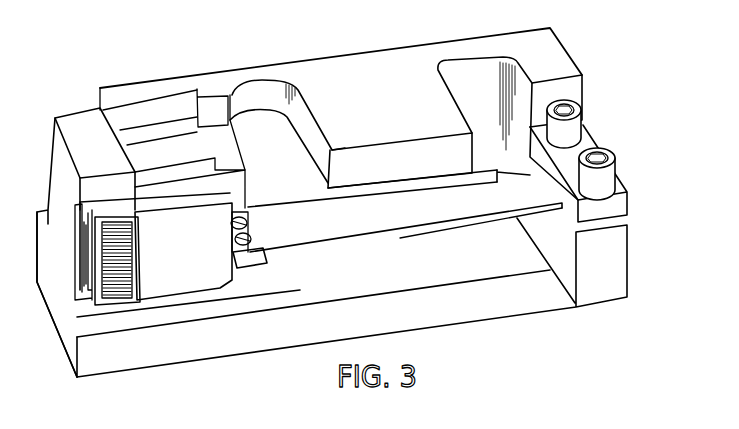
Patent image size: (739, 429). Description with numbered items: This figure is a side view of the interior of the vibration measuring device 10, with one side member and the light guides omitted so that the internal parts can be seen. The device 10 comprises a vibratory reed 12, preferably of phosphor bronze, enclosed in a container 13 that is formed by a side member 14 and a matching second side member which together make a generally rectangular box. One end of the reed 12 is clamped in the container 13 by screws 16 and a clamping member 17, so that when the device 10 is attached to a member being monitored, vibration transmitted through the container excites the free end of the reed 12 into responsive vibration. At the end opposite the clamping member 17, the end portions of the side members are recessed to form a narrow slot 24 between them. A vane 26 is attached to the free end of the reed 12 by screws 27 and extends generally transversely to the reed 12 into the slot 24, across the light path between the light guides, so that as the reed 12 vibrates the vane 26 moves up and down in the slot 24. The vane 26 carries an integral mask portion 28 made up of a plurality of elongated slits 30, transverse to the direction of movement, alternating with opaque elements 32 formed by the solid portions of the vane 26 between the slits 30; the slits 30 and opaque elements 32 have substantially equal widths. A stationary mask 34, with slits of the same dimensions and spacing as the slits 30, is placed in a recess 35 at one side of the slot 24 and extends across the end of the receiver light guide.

The vibration measuring device 10 is at (332, 189).
The vibratory reed 12 is at (423, 217).
The container 13 is at (463, 36).
The side member 14 is at (253, 69).
The screws 16 is at (574, 110).
The clamping member 17 is at (587, 145).
The slot 24 is at (182, 305).
The vane 26 is at (238, 278).
The screws 27 is at (251, 223).
The mask portion 28 is at (73, 315).
The slits 30 is at (134, 261).
The opaque elements 32 is at (125, 278).
The stationary mask 34 is at (85, 238).
The recess 35 is at (78, 262).